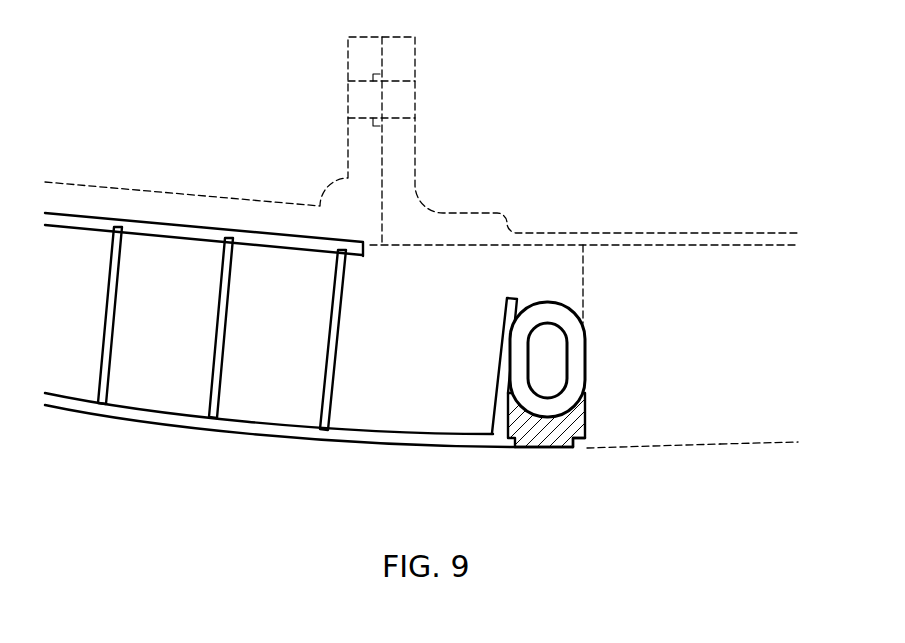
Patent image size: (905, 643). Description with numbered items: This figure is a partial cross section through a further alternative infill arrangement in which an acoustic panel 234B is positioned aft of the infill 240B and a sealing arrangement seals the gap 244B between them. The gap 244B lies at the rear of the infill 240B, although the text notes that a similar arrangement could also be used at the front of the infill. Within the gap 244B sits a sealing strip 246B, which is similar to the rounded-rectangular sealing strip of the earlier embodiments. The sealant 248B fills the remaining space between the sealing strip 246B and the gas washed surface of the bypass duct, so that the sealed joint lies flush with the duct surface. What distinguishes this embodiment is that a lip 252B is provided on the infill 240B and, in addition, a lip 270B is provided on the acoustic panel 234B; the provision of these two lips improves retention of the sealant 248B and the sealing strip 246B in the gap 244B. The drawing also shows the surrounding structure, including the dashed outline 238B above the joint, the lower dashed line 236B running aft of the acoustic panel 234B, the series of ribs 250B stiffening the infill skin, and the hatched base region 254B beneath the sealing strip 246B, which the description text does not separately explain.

The acoustic panel 234B is at (718, 413).
The aft outer surface line 236B is at (757, 443).
The upper outer surface line 238B is at (680, 245).
The infill 240B is at (257, 388).
The gap 244B is at (533, 349).
The sealing strip 246B is at (552, 313).
The sealant 248B is at (562, 442).
The stiffening ribs 250B is at (97, 417).
The lip 252B is at (510, 445).
The filler block 254B is at (550, 420).
The lip 270B is at (582, 442).